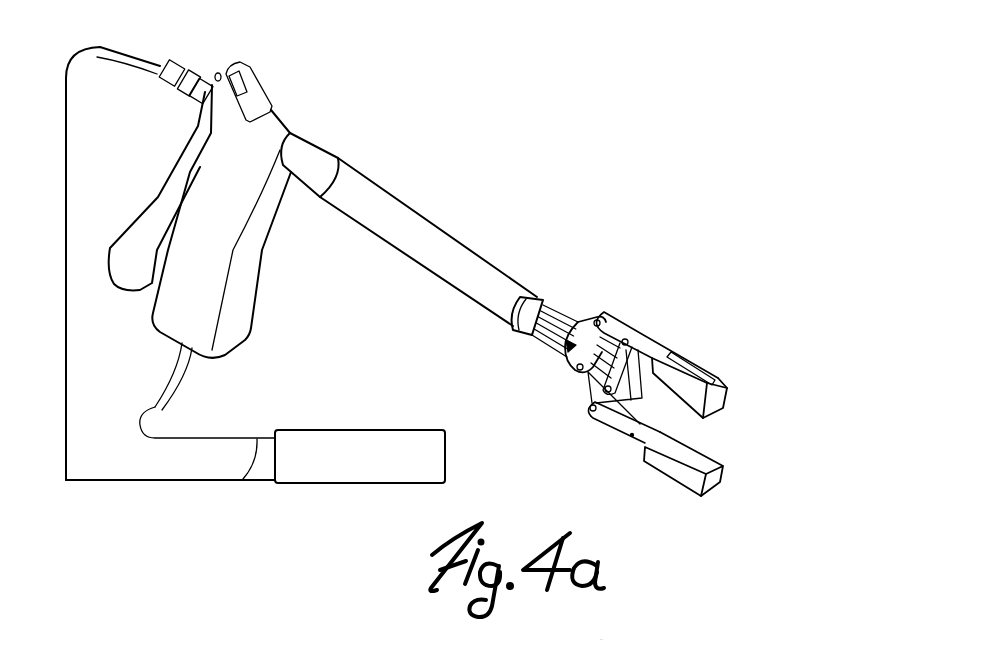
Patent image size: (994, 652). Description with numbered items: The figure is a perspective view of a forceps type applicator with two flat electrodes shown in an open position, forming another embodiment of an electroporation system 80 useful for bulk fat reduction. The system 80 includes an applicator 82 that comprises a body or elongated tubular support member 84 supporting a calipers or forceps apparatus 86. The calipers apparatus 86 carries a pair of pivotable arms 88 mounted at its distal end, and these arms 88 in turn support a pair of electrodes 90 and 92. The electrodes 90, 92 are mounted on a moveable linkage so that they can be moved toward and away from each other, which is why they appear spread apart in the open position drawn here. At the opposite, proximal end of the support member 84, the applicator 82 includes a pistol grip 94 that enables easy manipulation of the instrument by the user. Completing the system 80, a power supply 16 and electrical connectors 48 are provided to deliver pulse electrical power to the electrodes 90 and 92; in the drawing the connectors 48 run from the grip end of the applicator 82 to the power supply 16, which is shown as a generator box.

The power supply 16 is at (300, 484).
The electrical connectors 48 is at (241, 481).
The electroporation system 80 is at (633, 178).
The applicator 82 is at (429, 245).
The support member 84 is at (385, 213).
The calipers or forceps apparatus 86 is at (679, 428).
The pivotable arms 88 is at (723, 373).
The electrode 90 is at (715, 412).
The electrode 92 is at (713, 462).
The pistol grip 94 is at (282, 322).